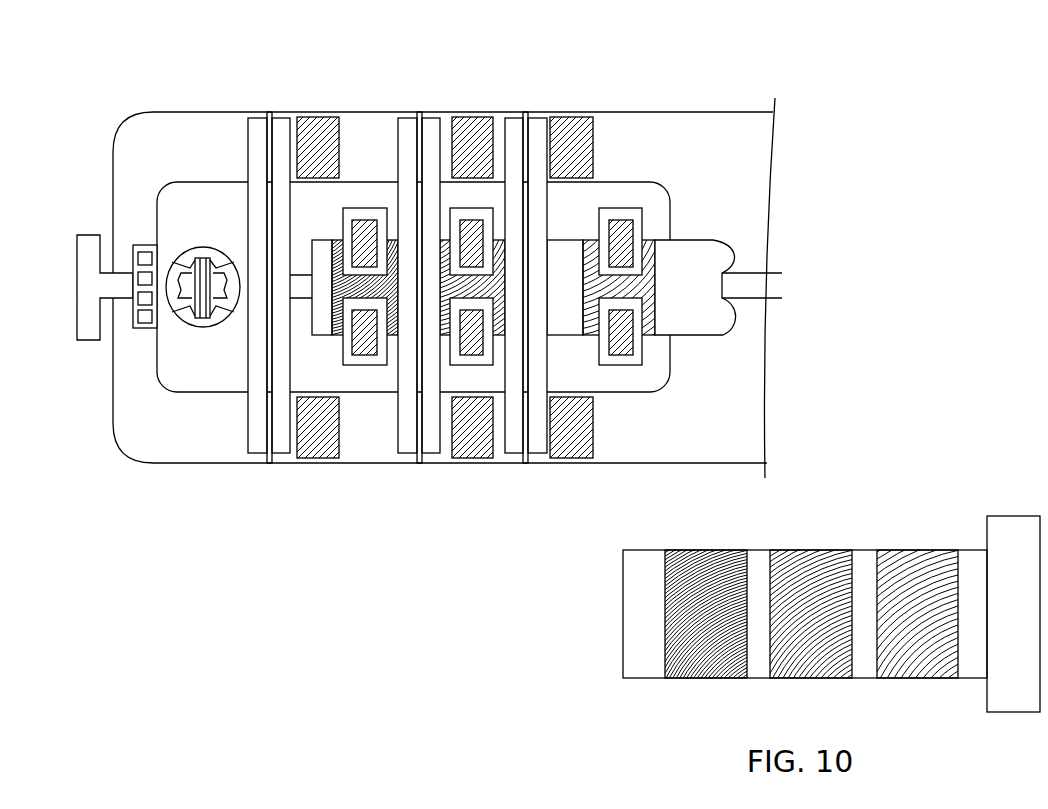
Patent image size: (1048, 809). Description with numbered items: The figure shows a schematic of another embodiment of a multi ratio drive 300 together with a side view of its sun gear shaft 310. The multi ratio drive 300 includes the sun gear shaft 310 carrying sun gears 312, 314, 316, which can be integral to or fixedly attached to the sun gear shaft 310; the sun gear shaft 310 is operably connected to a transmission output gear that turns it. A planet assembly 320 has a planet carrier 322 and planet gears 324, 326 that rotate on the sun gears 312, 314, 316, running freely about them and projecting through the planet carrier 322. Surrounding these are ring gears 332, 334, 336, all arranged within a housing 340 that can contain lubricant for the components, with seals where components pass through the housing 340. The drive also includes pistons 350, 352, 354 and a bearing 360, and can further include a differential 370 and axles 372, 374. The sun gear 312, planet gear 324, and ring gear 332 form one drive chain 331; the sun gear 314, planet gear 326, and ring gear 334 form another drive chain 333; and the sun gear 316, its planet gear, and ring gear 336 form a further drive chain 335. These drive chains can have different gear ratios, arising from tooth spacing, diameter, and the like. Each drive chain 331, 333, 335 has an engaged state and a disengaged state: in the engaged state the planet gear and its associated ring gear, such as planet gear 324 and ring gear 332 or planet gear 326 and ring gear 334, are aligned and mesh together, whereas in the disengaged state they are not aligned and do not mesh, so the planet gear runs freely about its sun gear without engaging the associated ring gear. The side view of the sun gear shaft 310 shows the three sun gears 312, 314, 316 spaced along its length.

In FIG. 9, the multi ratio drive 300 is at (143, 50).
In FIG. 9, the sun gear shaft 310 is at (426, 221).
In FIG. 10, the sun gear shaft 310 is at (796, 652).
In FIG. 9, the sun gear 312 is at (325, 318).
In FIG. 10, the sun gear 312 is at (700, 665).
In FIG. 9, the sun gear 314 is at (502, 240).
In FIG. 10, the sun gear 314 is at (803, 665).
In FIG. 9, the sun gear 316 is at (652, 254).
In FIG. 10, the sun gear 316 is at (913, 665).
In FIG. 9, the planet assembly 320 is at (448, 294).
In FIG. 9, the planet carrier 322 is at (645, 183).
In FIG. 9, the planet gear 324 is at (343, 236).
In FIG. 9, the planet gear 326 is at (473, 222).
In FIG. 9, the drive chain 331 is at (316, 482).
In FIG. 9, the ring gear 332 is at (320, 132).
In FIG. 9, the drive chain 333 is at (471, 482).
In FIG. 9, the ring gear 334 is at (464, 137).
In FIG. 9, the drive chain 335 is at (571, 482).
In FIG. 9, the ring gear 336 is at (594, 142).
In FIG. 9, the housing 340 is at (672, 112).
In FIG. 9, the piston 350 is at (255, 125).
In FIG. 9, the piston 352 is at (405, 125).
In FIG. 9, the piston 354 is at (515, 122).
In FIG. 9, the bearing 360 is at (134, 246).
In FIG. 9, the differential 370 is at (208, 256).
In FIG. 9, the axle 372 is at (92, 335).
In FIG. 9, the axle 374 is at (762, 285).